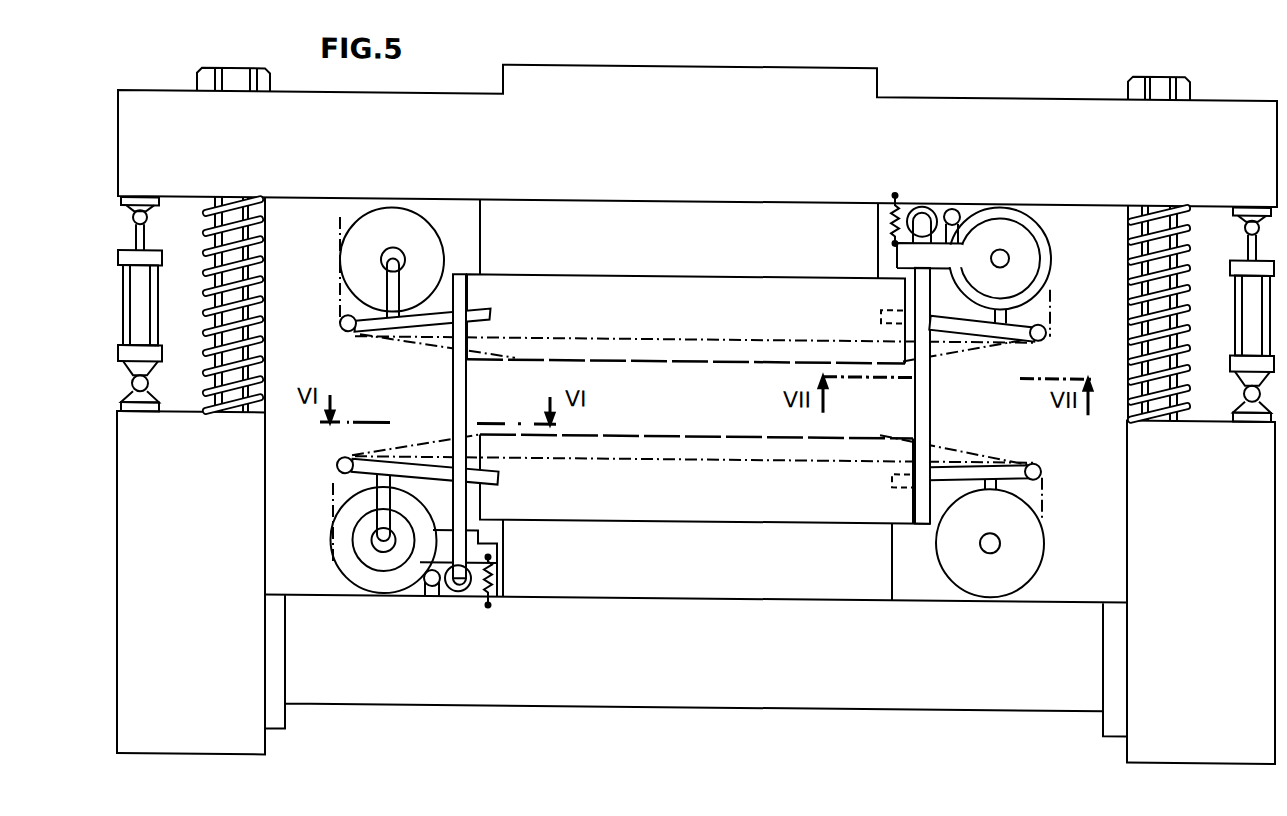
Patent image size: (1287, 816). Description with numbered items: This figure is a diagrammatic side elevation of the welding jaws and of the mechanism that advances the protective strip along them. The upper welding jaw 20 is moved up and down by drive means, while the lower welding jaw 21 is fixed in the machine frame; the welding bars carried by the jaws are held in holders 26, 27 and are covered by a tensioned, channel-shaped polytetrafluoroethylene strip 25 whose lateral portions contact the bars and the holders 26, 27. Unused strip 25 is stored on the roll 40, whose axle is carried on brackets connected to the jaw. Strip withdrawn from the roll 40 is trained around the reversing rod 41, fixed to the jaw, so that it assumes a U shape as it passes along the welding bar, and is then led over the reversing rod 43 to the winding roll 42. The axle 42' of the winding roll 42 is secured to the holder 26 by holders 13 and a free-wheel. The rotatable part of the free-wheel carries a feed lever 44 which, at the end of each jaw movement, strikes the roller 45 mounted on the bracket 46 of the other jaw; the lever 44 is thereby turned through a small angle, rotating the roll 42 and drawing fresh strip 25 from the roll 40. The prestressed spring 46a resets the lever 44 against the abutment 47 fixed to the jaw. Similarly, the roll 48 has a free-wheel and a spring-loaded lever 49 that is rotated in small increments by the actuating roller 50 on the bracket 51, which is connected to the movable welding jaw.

The holders 13 is at (878, 308).
The welding jaw 20 is at (603, 155).
The welding jaw 21 is at (746, 661).
The polytetrafluoroethylene strip 25 is at (410, 342).
The holder 26 is at (682, 316).
The holder 27 is at (686, 500).
The roll 40 is at (343, 256).
The reversing rod 41 is at (343, 326).
The winding roll 42 is at (1019, 265).
The axle 42' is at (1040, 240).
The reversing rod 43 is at (1045, 327).
The feed lever 44 is at (940, 240).
The roller 45 is at (919, 199).
The bracket 46 is at (918, 389).
The prestressed spring 46a is at (888, 215).
The abutment 47 is at (430, 587).
The roll 48 is at (340, 550).
The spring-loaded lever 49 is at (475, 542).
The actuating roller 50 is at (462, 589).
The bracket 51 is at (466, 405).